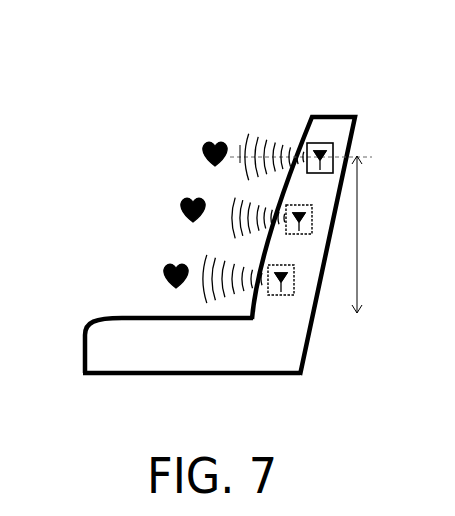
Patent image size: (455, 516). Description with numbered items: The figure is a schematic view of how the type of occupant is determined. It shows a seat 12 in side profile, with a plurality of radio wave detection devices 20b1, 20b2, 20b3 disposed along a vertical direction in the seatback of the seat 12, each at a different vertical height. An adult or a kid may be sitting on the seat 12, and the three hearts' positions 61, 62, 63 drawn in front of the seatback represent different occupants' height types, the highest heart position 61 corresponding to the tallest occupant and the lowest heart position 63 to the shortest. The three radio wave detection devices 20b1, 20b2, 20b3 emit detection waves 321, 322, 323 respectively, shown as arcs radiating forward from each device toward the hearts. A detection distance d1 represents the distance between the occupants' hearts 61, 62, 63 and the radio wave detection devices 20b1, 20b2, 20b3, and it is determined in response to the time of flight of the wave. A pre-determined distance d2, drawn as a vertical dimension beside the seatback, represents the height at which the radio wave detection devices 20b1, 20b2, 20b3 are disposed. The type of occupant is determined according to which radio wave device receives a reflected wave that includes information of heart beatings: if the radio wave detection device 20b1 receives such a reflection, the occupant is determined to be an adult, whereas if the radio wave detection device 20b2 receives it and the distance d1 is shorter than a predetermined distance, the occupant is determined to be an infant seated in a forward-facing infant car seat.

The seat 12 is at (130, 362).
The radio wave detection device 20b1 is at (322, 148).
The radio wave detection device 20b2 is at (306, 234).
The radio wave detection device 20b3 is at (273, 294).
The detection wave 321 is at (267, 143).
The detection wave 322 is at (222, 205).
The detection wave 323 is at (205, 262).
The heart position 61 is at (210, 147).
The heart position 62 is at (188, 203).
The heart position 63 is at (170, 265).
The detection distance d1 is at (240, 145).
The pre-determined distance d2 is at (357, 236).